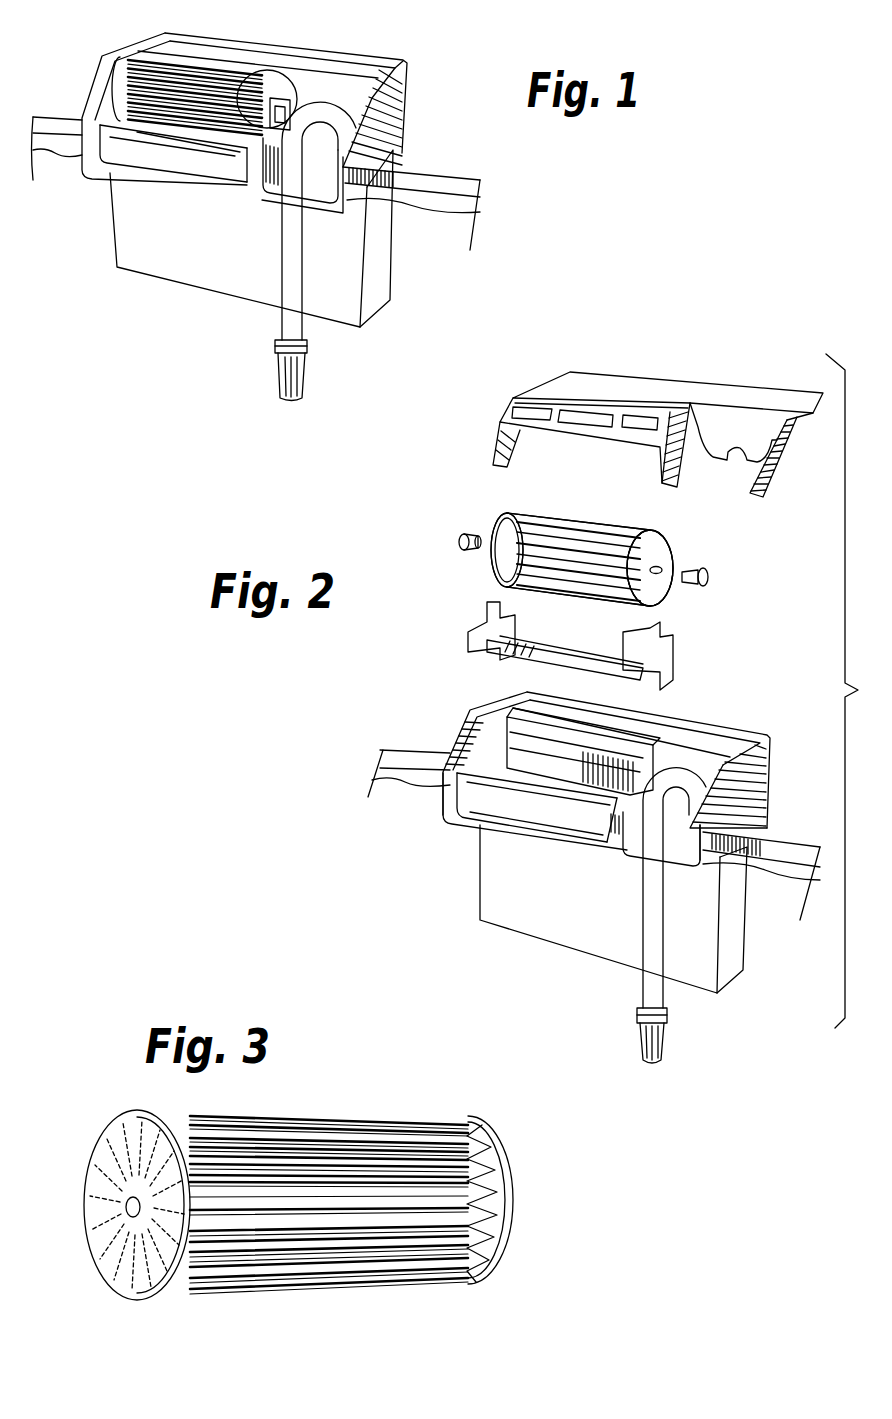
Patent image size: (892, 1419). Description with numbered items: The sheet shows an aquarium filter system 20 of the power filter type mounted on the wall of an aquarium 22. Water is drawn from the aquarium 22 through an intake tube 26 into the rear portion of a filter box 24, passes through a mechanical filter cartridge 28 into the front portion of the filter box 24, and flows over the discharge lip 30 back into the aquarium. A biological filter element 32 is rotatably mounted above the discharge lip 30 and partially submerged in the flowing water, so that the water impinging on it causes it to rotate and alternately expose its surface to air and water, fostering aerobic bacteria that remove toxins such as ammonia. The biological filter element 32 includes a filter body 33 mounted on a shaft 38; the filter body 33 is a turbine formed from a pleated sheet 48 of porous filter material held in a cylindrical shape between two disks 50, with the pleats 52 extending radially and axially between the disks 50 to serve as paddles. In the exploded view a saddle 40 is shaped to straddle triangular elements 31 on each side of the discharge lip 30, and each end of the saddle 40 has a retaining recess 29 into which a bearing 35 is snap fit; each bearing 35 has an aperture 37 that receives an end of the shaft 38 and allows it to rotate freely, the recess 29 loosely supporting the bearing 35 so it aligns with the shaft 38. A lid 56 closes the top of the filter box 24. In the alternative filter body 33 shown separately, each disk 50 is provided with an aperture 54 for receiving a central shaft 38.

In FIG. 1, the aquarium filter system 20 is at (97, 200).
In FIG. 2, the aquarium filter system 20 is at (400, 675).
In FIG. 1, the aquarium 22 is at (417, 213).
In FIG. 2, the aquarium 22 is at (770, 880).
In FIG. 1, the filter box 24 is at (393, 123).
In FIG. 2, the filter box 24 is at (763, 773).
In FIG. 1, the intake tube 26 is at (287, 320).
In FIG. 2, the intake tube 26 is at (650, 987).
In FIG. 2, the mechanical filter cartridge 28 is at (620, 740).
In FIG. 2, the retaining recess 29 is at (487, 617).
In FIG. 1, the discharge lip 30 is at (230, 140).
In FIG. 2, the discharge lip 30 is at (523, 783).
In FIG. 2, the triangular elements 31 is at (447, 750).
In FIG. 1, the biological filter element 32 is at (147, 70).
In FIG. 2, the biological filter element 32 is at (490, 580).
In FIG. 2, the filter body 33 is at (660, 530).
In FIG. 2, the bearing 35 is at (457, 545).
In FIG. 2, the aperture 37 is at (490, 533).
In FIG. 2, the shaft 38 is at (658, 572).
In FIG. 1, the saddle 40 is at (283, 105).
In FIG. 2, the saddle 40 is at (483, 660).
In FIG. 2, the pleated sheet 48 is at (582, 538).
In FIG. 3, the pleated sheet 48 is at (343, 1201).
In FIG. 2, the disks 50 is at (503, 527).
In FIG. 3, the disks 50 is at (113, 1133).
In FIG. 2, the pleats 52 is at (537, 527).
In FIG. 3, the pleats 52 is at (390, 1250).
In FIG. 3, the aperture 54 is at (130, 1217).
In FIG. 2, the lid 56 is at (740, 407).